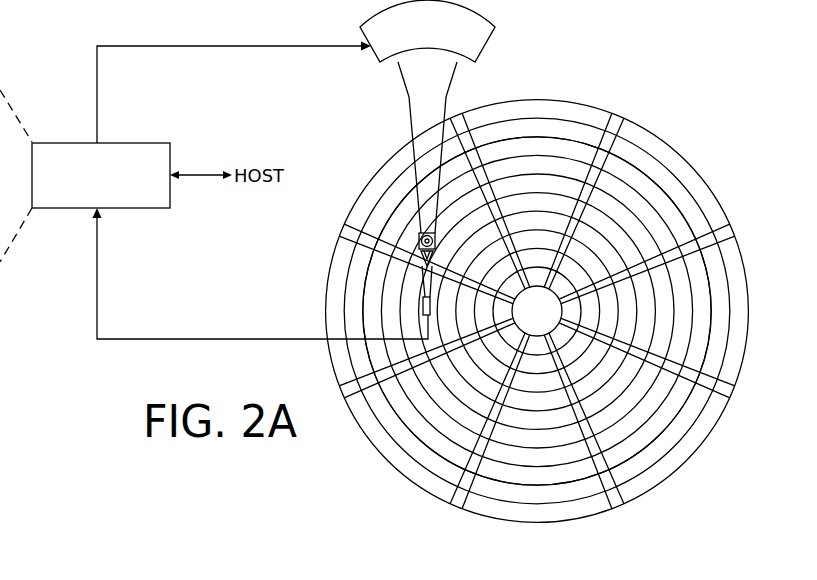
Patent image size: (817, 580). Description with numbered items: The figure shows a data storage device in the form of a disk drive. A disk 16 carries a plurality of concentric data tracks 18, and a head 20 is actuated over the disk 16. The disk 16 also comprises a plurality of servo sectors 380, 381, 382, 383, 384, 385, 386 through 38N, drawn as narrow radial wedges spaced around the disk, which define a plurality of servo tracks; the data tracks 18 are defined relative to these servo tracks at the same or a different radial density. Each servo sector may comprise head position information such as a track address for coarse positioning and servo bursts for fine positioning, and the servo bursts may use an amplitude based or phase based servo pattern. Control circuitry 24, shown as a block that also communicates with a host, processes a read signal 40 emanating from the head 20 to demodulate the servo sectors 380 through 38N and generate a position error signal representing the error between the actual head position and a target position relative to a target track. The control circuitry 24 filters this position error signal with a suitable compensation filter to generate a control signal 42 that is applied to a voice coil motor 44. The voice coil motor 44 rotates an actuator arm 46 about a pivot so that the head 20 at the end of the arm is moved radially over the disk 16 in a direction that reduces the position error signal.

The disk 16 is at (687, 145).
The data tracks 18 is at (537, 123).
The head 20 is at (413, 299).
The control circuitry 24 is at (137, 143).
The servo sector 380 is at (623, 122).
The servo sector 381 is at (724, 236).
The servo sector 382 is at (723, 393).
The servo sector 383 is at (614, 501).
The servo sector 384 is at (452, 498).
The servo sector 385 is at (344, 389).
The servo sector 386 is at (350, 225).
The servo sector 38N is at (465, 122).
The read signal 40 is at (197, 339).
The control signal 42 is at (97, 98).
The voice coil motor 44 is at (373, 58).
The actuator arm 46 is at (409, 130).